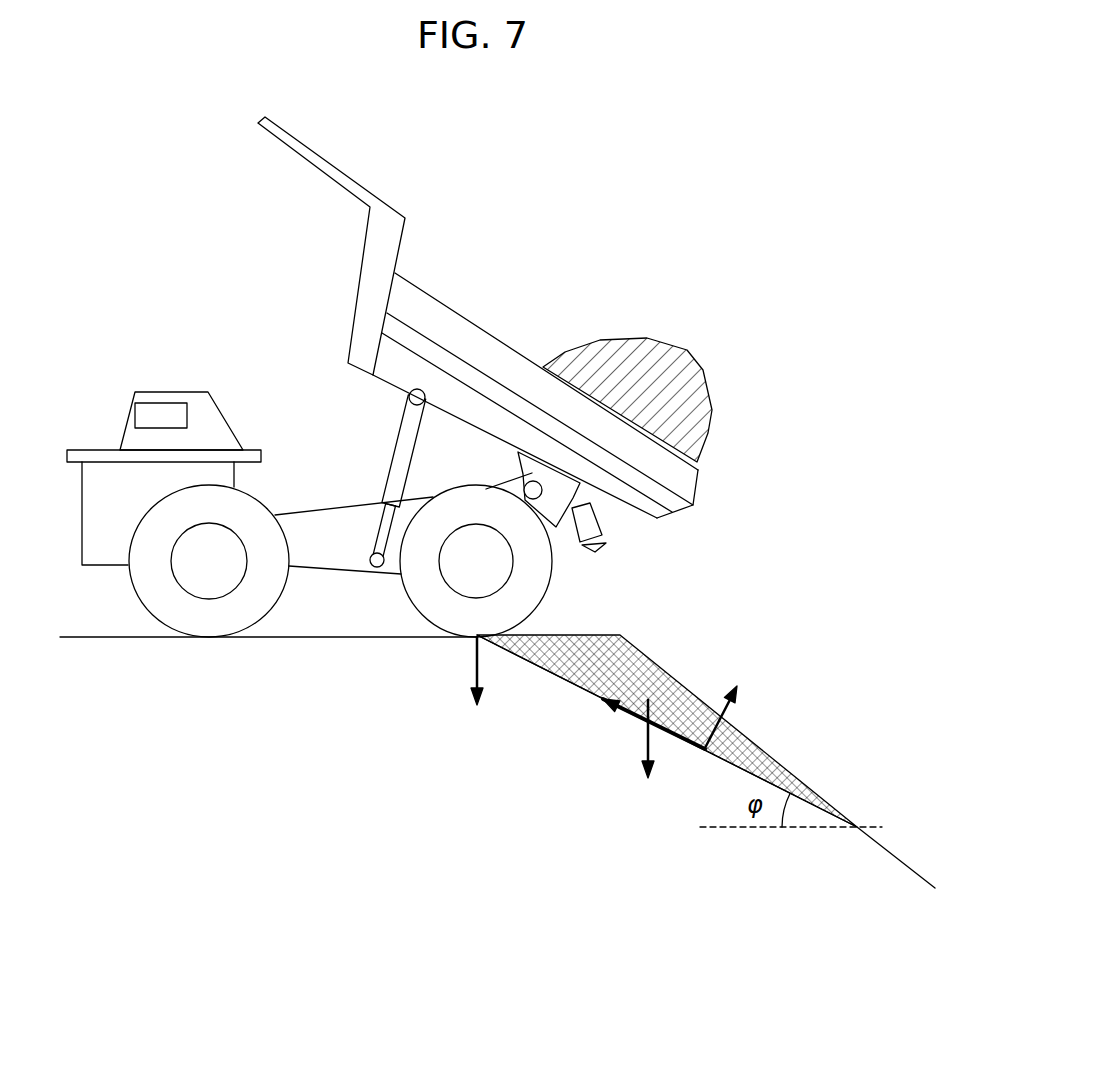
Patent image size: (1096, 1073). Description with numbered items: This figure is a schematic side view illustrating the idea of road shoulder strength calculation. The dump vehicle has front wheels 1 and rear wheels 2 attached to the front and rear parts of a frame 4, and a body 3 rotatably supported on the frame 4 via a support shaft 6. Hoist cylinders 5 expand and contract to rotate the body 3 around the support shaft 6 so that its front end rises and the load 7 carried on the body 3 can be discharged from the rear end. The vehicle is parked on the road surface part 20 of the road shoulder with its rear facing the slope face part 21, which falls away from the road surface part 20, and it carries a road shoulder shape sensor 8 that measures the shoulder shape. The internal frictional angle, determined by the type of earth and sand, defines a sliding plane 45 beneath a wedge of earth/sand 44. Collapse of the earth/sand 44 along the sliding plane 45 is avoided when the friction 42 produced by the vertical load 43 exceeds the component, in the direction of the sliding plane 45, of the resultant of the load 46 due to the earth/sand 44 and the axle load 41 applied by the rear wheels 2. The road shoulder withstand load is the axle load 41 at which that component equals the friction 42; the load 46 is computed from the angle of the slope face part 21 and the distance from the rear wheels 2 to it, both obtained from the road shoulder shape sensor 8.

The front wheels 1 is at (143, 588).
The rear wheels 2 is at (424, 612).
The body 3 is at (482, 333).
The frame 4 is at (317, 562).
The hoist cylinders 5 is at (397, 435).
The support shaft 6 is at (523, 483).
The load 7 is at (600, 350).
The road shoulder shape sensor 8 is at (605, 537).
The road surface part 20 is at (80, 636).
The slope face part 21 is at (890, 850).
The axle load 41 is at (472, 686).
The friction 42 is at (616, 720).
The vertical load 43 is at (732, 704).
The earth/sand 44 is at (635, 660).
The sliding plane 45 is at (738, 768).
The load by the earth/sand 46 is at (647, 754).